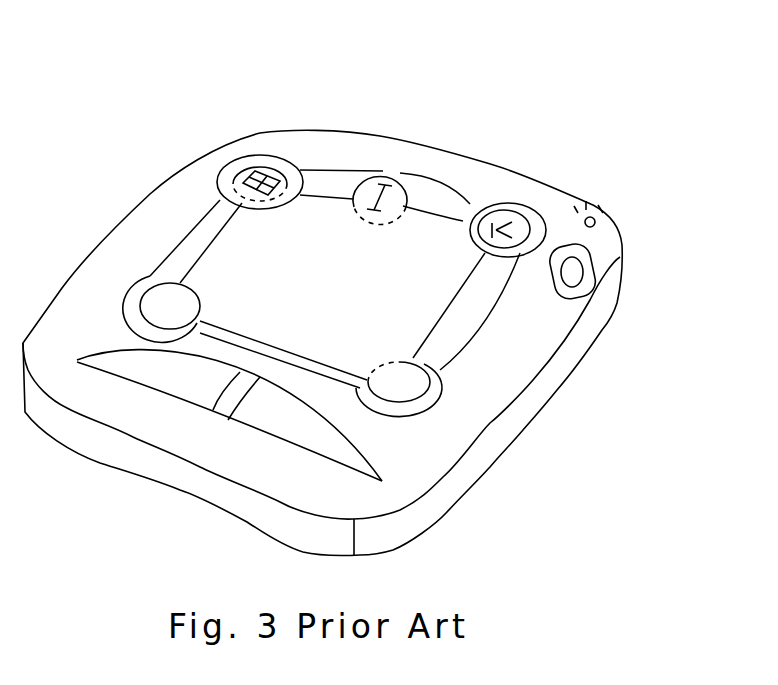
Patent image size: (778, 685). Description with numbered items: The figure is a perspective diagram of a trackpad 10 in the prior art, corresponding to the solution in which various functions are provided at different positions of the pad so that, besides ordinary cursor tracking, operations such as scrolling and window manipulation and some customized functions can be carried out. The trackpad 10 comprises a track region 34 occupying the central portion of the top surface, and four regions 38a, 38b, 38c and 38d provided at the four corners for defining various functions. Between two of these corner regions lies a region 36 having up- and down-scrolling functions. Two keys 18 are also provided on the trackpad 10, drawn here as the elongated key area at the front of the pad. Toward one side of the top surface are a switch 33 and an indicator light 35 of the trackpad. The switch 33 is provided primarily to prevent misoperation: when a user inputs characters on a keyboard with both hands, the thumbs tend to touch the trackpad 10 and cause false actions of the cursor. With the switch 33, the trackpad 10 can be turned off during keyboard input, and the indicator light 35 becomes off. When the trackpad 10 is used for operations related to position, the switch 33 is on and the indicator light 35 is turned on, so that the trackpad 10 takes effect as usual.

The trackpad 10 is at (478, 88).
The keys 18 is at (202, 393).
The switch 33 is at (573, 274).
The track region 34 is at (343, 288).
The indicator light 35 is at (596, 223).
The region having up- and down-scrolling functions 36 is at (383, 175).
The region for defining various functions 38a is at (507, 220).
The region for defining various functions 38b is at (417, 388).
The region for defining various functions 38c is at (150, 305).
The region for defining various functions 38d is at (247, 173).